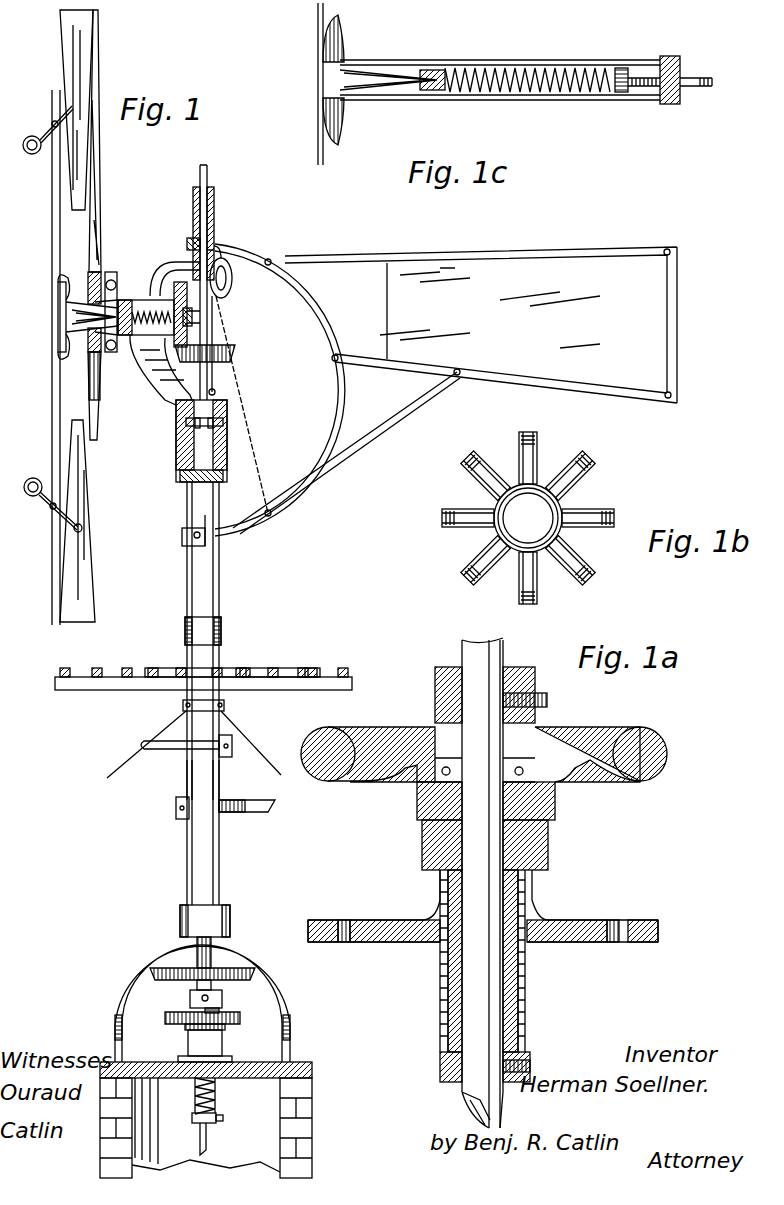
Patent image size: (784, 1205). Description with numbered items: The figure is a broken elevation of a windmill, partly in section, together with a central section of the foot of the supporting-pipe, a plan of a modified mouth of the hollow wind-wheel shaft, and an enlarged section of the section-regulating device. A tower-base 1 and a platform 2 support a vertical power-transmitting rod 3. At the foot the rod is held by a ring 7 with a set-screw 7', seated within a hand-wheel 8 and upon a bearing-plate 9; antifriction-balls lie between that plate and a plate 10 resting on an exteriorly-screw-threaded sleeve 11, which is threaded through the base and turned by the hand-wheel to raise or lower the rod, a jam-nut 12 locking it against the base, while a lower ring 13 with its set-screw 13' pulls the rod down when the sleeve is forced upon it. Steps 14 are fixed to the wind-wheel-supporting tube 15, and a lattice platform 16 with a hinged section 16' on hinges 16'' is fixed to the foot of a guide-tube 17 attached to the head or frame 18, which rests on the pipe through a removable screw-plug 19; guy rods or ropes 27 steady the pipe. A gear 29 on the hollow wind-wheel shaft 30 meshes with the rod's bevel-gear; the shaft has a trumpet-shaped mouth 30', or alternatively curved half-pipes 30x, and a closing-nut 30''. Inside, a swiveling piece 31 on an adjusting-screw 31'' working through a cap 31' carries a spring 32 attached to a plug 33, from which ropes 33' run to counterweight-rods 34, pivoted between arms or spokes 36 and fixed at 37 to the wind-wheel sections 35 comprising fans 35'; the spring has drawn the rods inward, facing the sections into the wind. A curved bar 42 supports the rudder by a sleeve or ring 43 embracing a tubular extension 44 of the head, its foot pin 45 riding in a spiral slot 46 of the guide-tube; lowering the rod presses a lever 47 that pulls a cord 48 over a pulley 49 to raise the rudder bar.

In FIG. 1, the tower-base 1 is at (210, 1056).
In FIG. 1A, the tower-base 1 is at (598, 913).
In FIG. 1, the platform 2 is at (262, 1068).
In FIG. 1, the power-transmitting rod 3 is at (208, 180).
In FIG. 1A, the power-transmitting rod 3 is at (482, 883).
In FIG. 1, the ring 7 is at (214, 972).
In FIG. 1A, the ring 7 is at (499, 695).
In FIG. 1, the set-screw 7' is at (236, 1011).
In FIG. 1A, the set-screw 7' is at (548, 708).
In FIG. 1, the hand-wheel 8 is at (187, 1026).
In FIG. 1A, the hand-wheel 8 is at (484, 765).
In FIG. 1, the bearing-plate 9 is at (214, 422).
In FIG. 1A, the bearing-plate 9 is at (435, 730).
In FIG. 1A, the plate 10 is at (417, 800).
In FIG. 1, the exteriorly-screw-threaded sleeve 11 is at (215, 1096).
In FIG. 1A, the exteriorly-screw-threaded sleeve 11 is at (528, 990).
In FIG. 1, the jam-nut 12 is at (222, 1036).
In FIG. 1A, the jam-nut 12 is at (548, 845).
In FIG. 1, the ring 13 is at (192, 1134).
In FIG. 1A, the ring 13 is at (432, 1067).
In FIG. 1, the set-screw 13' is at (235, 1125).
In FIG. 1A, the set-screw 13' is at (533, 1067).
In FIG. 1, the steps 14 is at (158, 750).
In FIG. 1, the wind-wheel-supporting tube 15 is at (214, 785).
In FIG. 1, the platform 16 is at (216, 659).
In FIG. 1, the hinged section of the platform 16' is at (220, 675).
In FIG. 1, the hinges 16'' is at (233, 638).
In FIG. 1, the guide-tube 17 is at (220, 596).
In FIG. 1, the head or frame 18 is at (185, 441).
In FIG. 1, the removable screw-plug 19 is at (212, 407).
In FIG. 1, the guy rods or ropes 27 is at (194, 739).
In FIG. 1, the gear 29 is at (135, 272).
In FIG. 1, the hollow wind-wheel shaft 30 is at (134, 347).
In FIG. 1C, the hollow wind-wheel shaft 30 is at (500, 91).
In FIG. 1, the flaring or trumpet-shaped mouth 30' is at (37, 364).
In FIG. 1C, the flaring or trumpet-shaped mouth 30' is at (380, 80).
In FIG. 1, the closing-nut 30'' is at (165, 271).
In FIG. 1B, the curved guides or half-pipes 30x is at (470, 556).
In FIG. 1, the swiveling piece 31 is at (204, 311).
In FIG. 1C, the swiveling piece 31 is at (612, 52).
In FIG. 1C, the cap 31' is at (691, 67).
In FIG. 1, the adjusting-screw 31'' is at (229, 309).
In FIG. 1C, the adjusting-screw 31'' is at (650, 50).
In FIG. 1, the spring 32 is at (160, 360).
In FIG. 1C, the spring 32 is at (525, 68).
In FIG. 1, the plug 33 is at (59, 317).
In FIG. 1C, the plug 33 is at (447, 57).
In FIG. 1, the wire or other ropes 33' is at (41, 357).
In FIG. 1C, the wire or other ropes 33' is at (302, 84).
In FIG. 1, the rods 34 is at (50, 122).
In FIG. 1, the wind-wheel sections 35 is at (90, 521).
In FIG. 1, the fans 35' is at (99, 110).
In FIG. 1, the arms or spokes 36 is at (100, 226).
In FIG. 1, the fixing point 37 is at (84, 528).
In FIG. 1, the bar 42 is at (250, 252).
In FIG. 1, the sleeve or ring 43 is at (214, 220).
In FIG. 1, the tubular extension 44 is at (218, 233).
In FIG. 1, the pin or part 45 is at (182, 544).
In FIG. 1, the spiral recess or slot 46 is at (200, 524).
In FIG. 1, the lever 47 is at (214, 390).
In FIG. 1, the cord or rope 48 is at (248, 404).
In FIG. 1, the pulley 49 is at (233, 272).